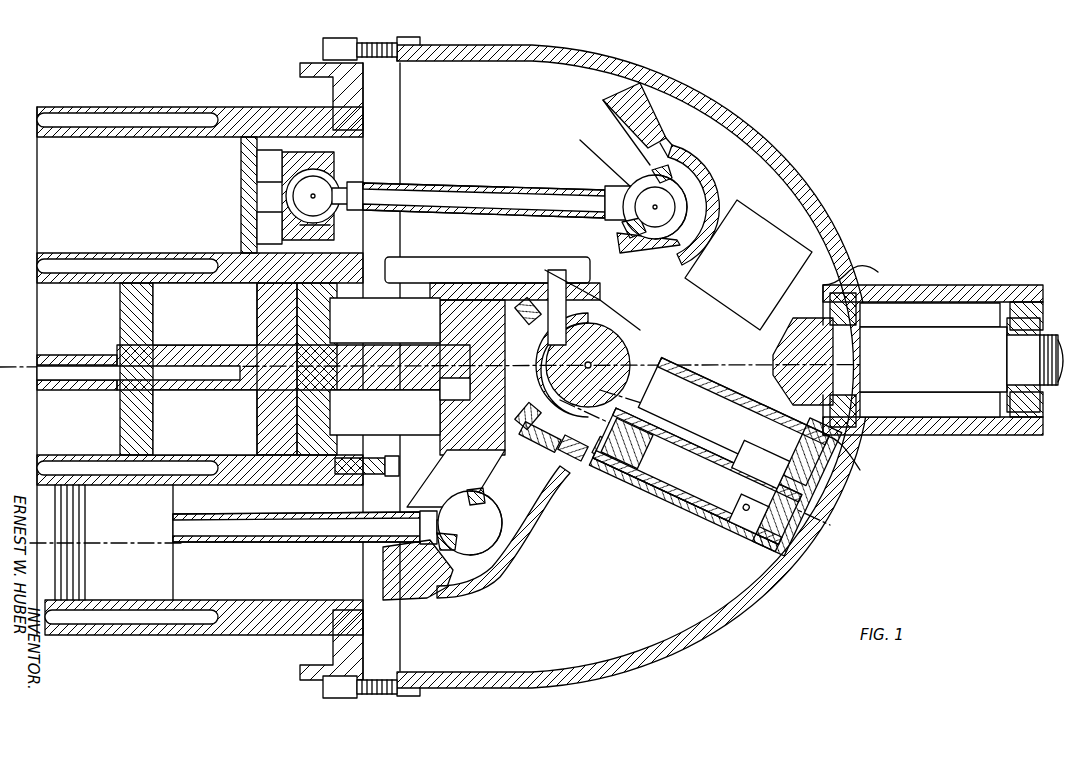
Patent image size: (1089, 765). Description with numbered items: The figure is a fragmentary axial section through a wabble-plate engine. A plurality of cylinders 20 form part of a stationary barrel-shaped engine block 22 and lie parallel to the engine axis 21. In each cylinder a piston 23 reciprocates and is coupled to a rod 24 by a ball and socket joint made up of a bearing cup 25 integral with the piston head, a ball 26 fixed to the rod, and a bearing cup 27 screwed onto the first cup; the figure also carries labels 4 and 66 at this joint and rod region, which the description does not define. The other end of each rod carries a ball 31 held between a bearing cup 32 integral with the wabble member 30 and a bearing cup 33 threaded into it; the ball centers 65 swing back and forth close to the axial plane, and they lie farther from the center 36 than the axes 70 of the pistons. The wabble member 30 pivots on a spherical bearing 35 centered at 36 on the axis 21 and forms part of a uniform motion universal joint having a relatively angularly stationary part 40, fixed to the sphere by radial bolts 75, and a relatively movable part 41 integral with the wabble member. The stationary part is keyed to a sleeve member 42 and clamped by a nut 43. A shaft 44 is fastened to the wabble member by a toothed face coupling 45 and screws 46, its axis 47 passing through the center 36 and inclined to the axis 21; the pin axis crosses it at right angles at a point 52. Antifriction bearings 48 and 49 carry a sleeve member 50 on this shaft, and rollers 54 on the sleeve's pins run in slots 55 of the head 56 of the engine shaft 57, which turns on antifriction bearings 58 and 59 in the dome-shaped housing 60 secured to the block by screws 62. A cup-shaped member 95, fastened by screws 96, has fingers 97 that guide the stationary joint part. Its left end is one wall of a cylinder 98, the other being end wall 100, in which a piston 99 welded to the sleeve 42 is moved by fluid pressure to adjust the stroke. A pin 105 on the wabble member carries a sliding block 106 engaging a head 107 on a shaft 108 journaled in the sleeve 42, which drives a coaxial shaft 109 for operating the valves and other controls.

The axis of rotor 4 is at (695, 461).
The cylinder 20 is at (245, 640).
The engine axis 21 is at (910, 362).
The engine block 22 is at (175, 628).
The piston 23 is at (240, 168).
The rod 24 is at (470, 182).
The bearing cup 25 is at (268, 197).
The ball 26 is at (325, 180).
The bearing cup 27 is at (325, 225).
The wabble member 30 is at (603, 305).
The ball 31 is at (648, 197).
The bearing cup 32 is at (648, 245).
The bearing cup 33 is at (660, 175).
The spherical bearing 35 is at (612, 348).
The center 36 is at (680, 412).
The relatively angularly stationary part 40 is at (485, 300).
The relatively movable part 41 is at (540, 448).
The sleeve member 42 is at (408, 345).
The nut 43 is at (457, 400).
The shaft 44 is at (699, 472).
The toothed face coupling 45 is at (595, 455).
The screws 46 is at (565, 455).
The axis of the shaft 47 is at (758, 431).
The antifriction bearing 48 is at (626, 459).
The antifriction bearing 49 is at (786, 482).
The sleeve member 50 is at (687, 498).
The point 52 is at (739, 506).
The rollers 54 is at (785, 400).
The slots 55 is at (741, 404).
The head 56 is at (820, 270).
The engine shaft 57 is at (945, 338).
The antifriction bearing 58 is at (880, 273).
The antifriction bearing 59 is at (1025, 417).
The dome-shaped housing 60 is at (728, 615).
The screws 62 is at (380, 700).
The center of ball 65 is at (660, 202).
The ball 66 is at (313, 196).
The axes of the pistons 70 is at (245, 197).
The radial bolts 75 is at (568, 328).
The cup-shaped member 95 is at (325, 430).
The screws 96 is at (378, 480).
The fingers 97 is at (502, 262).
The cylinder 98 is at (188, 369).
The piston 99 is at (256, 430).
The end wall 100 is at (155, 425).
The pin 105 is at (532, 365).
The sliding block or roller 106 is at (520, 318).
The head 107 is at (510, 415).
The shaft 108 is at (360, 335).
The coaxial shaft 109 is at (88, 355).